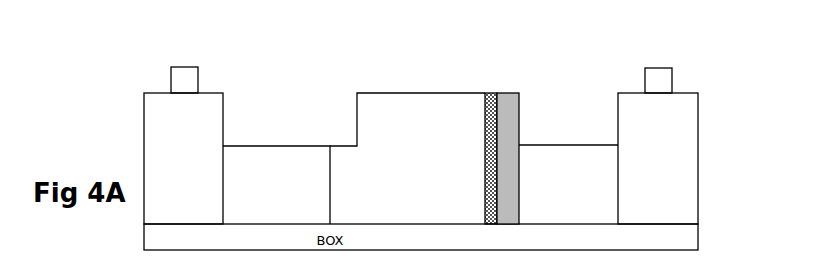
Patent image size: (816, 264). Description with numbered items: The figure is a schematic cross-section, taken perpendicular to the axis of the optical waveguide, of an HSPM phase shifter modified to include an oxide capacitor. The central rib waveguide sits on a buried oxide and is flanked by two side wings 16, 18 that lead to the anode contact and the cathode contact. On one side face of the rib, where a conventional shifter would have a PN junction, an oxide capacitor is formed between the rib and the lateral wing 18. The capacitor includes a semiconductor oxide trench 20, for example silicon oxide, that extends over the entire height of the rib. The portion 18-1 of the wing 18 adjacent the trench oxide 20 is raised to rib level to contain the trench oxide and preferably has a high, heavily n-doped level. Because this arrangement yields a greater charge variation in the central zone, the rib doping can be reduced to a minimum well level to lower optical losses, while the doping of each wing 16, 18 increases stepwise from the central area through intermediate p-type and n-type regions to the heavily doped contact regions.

The side wing 16 is at (275, 97).
The lateral wing 18 is at (576, 92).
The adjacent portion of the wing 18-1 is at (507, 97).
The semiconductor oxide trench 20 is at (486, 103).